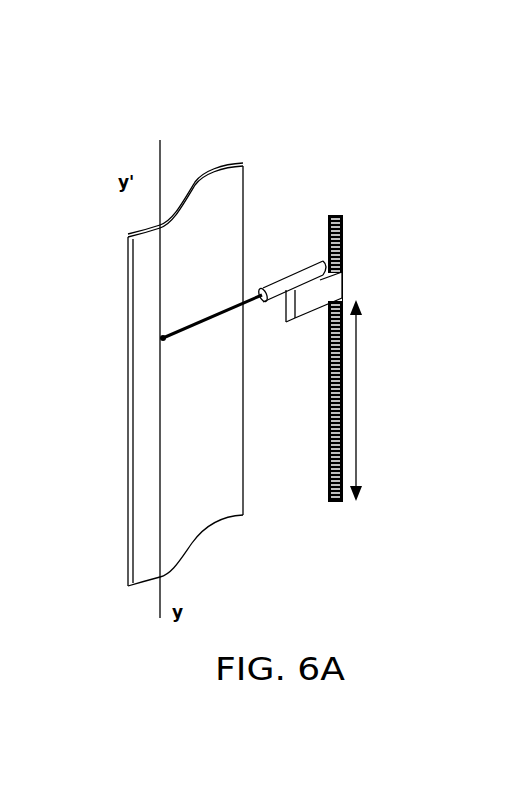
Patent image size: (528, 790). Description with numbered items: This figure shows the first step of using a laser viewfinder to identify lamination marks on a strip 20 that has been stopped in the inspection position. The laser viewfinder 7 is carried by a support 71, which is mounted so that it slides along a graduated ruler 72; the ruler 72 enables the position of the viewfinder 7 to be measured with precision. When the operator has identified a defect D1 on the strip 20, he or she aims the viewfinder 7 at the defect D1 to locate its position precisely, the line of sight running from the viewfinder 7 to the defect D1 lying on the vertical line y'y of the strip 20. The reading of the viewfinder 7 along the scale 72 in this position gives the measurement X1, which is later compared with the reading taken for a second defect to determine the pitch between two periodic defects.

The strip 20 is at (226, 212).
The laser viewfinder 7 is at (312, 265).
The support 71 is at (326, 287).
The graduated ruler 72 is at (328, 429).
The defect D1 is at (158, 339).
The measurement of viewfinder position X1 is at (372, 400).